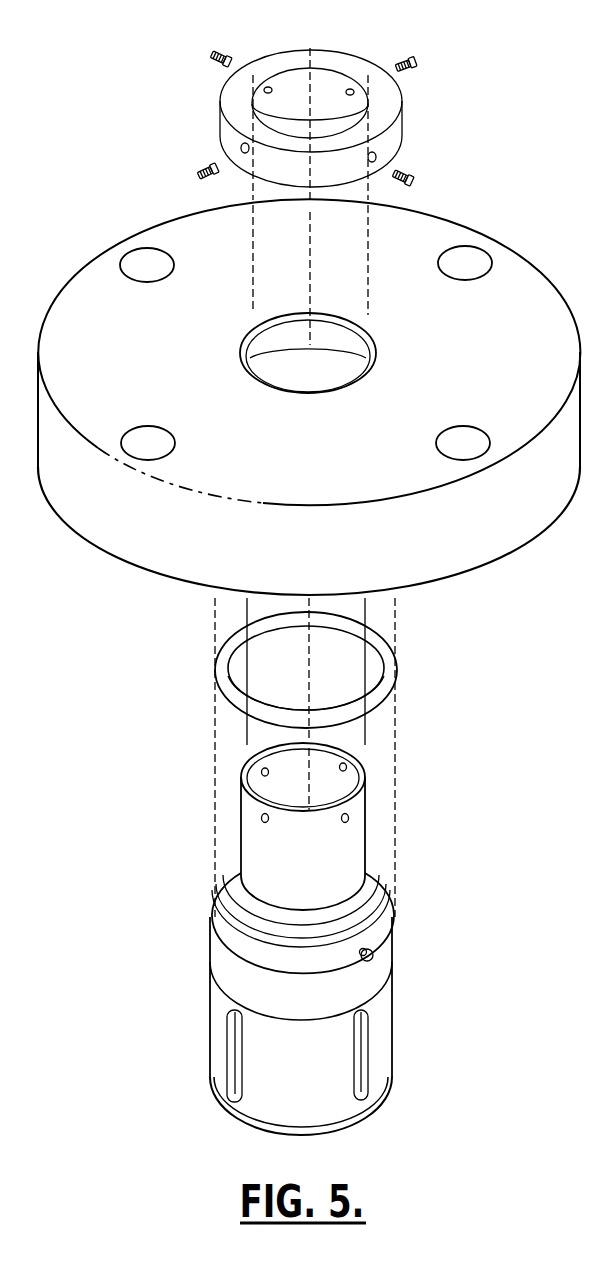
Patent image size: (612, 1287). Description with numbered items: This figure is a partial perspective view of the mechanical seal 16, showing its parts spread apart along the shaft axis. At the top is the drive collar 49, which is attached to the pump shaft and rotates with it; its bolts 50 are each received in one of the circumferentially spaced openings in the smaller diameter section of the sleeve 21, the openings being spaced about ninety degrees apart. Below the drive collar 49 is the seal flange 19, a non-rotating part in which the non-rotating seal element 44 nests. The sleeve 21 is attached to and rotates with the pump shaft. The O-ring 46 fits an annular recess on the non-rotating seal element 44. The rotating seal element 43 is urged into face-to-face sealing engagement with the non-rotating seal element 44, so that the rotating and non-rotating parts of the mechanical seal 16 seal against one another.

The mechanical seal 16 is at (84, 252).
The seal flange 19 is at (138, 548).
The sleeve 21 is at (288, 869).
The rotating seal element 43 is at (382, 967).
The non-rotating seal element 44 is at (224, 927).
The O-ring 46 is at (398, 668).
The drive collar 49 is at (400, 134).
The bolt 50 is at (210, 55).